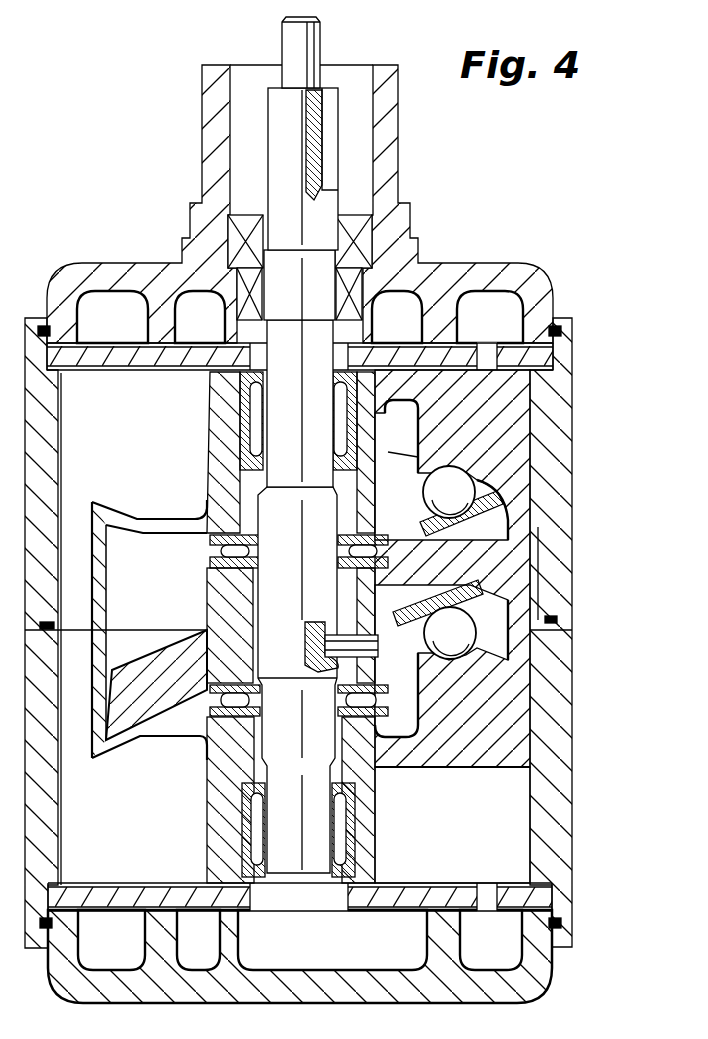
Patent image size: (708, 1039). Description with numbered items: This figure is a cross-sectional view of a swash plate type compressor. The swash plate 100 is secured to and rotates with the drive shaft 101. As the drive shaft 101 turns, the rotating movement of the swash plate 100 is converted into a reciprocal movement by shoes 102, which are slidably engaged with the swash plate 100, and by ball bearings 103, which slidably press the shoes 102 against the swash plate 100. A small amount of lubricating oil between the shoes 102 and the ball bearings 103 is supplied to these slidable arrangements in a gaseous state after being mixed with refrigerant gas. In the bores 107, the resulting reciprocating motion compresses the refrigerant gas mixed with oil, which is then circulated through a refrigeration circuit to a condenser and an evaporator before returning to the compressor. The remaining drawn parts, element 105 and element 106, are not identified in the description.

The swash plate 100 is at (157, 700).
The drive shaft 101 is at (252, 432).
The shoes 102 is at (497, 500).
The ball bearings 103 is at (476, 488).
The outer casing 105 is at (567, 733).
The stator 106 is at (523, 415).
The bores 107 is at (520, 805).